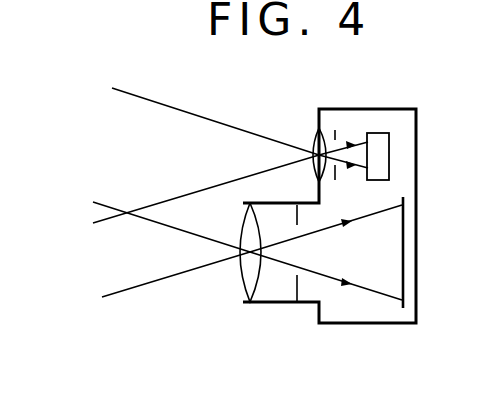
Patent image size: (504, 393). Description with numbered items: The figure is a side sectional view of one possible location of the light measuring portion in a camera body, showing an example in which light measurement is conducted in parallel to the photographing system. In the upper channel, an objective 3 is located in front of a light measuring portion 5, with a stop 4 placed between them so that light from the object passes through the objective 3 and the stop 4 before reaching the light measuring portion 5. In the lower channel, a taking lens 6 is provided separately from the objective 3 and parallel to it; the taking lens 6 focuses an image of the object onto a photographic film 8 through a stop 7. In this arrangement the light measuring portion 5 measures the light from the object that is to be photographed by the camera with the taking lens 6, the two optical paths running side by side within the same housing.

The objective 3 is at (314, 140).
The stop 4 is at (336, 133).
The light measuring portion 5 is at (380, 158).
The taking lens 6 is at (247, 281).
The stop 7 is at (300, 288).
The photographic film 8 is at (403, 252).